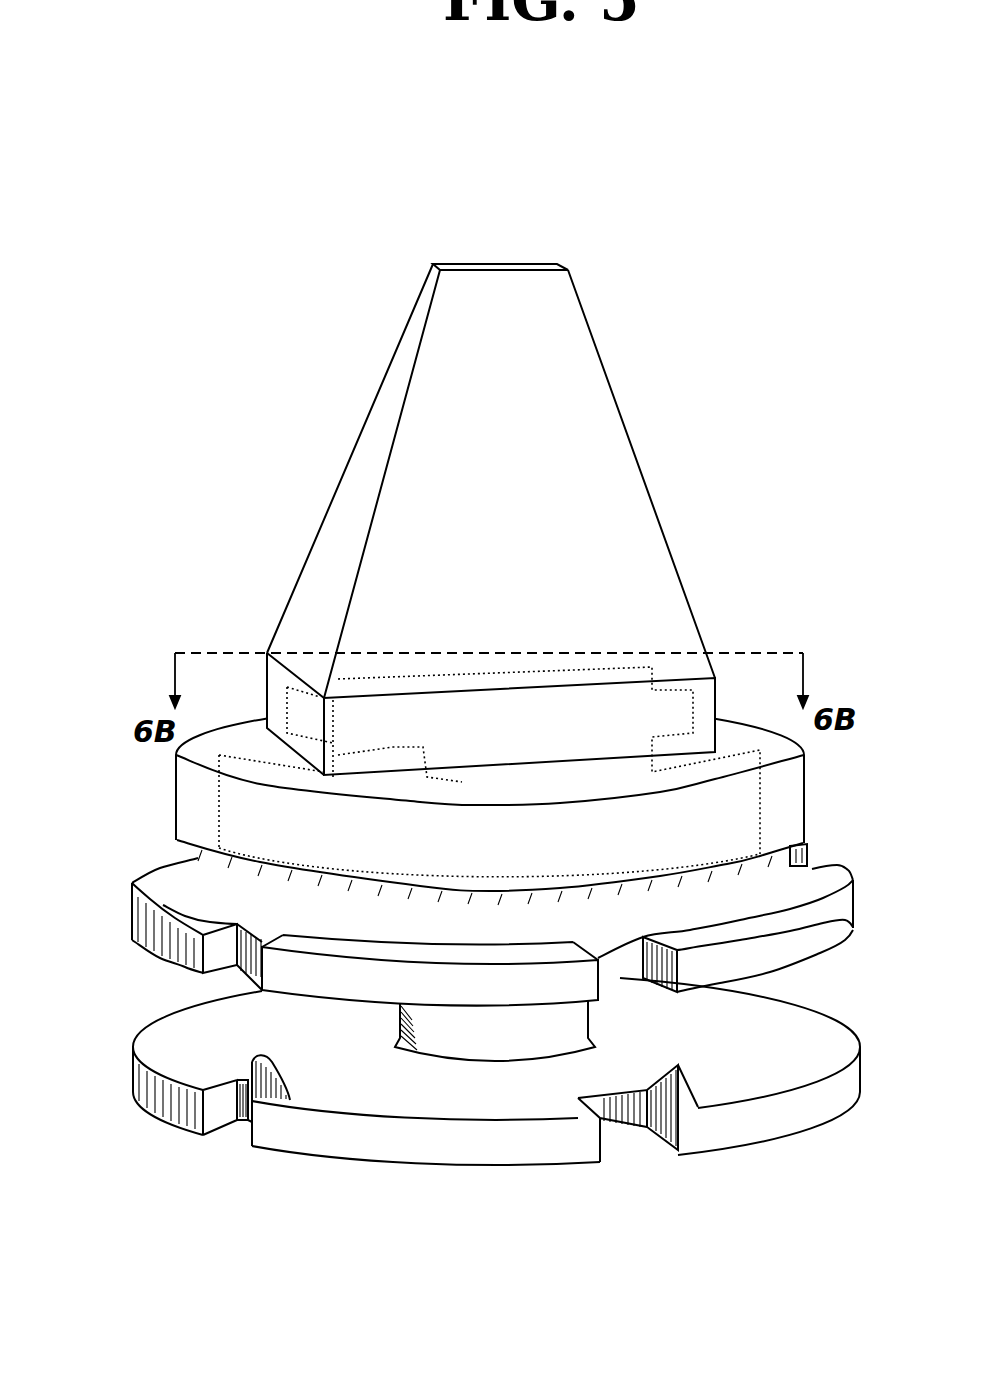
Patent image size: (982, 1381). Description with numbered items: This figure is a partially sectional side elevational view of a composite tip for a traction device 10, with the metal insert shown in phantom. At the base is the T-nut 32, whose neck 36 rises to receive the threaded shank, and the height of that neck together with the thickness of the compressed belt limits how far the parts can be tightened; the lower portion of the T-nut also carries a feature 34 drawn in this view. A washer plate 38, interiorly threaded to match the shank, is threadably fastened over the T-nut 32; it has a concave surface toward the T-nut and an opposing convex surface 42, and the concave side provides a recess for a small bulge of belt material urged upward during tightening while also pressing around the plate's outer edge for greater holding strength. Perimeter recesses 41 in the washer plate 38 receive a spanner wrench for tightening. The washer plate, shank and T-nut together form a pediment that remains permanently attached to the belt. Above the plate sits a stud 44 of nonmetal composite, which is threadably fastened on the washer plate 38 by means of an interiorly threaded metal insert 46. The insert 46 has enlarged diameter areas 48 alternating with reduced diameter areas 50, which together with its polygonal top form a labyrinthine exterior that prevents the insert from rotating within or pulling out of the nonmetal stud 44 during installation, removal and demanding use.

The traction device 10 is at (262, 462).
The T-nut 32 is at (360, 1100).
The notch 34 is at (307, 1133).
The neck 36 is at (493, 1030).
The washer plate 38 is at (163, 912).
The perimeter recesses 41 is at (222, 952).
The convex surface 42 is at (197, 890).
The stud 44 is at (395, 357).
The metal insert 46 is at (558, 708).
The enlarged diameter areas 48 is at (326, 722).
The reduced diameter areas 50 is at (424, 776).